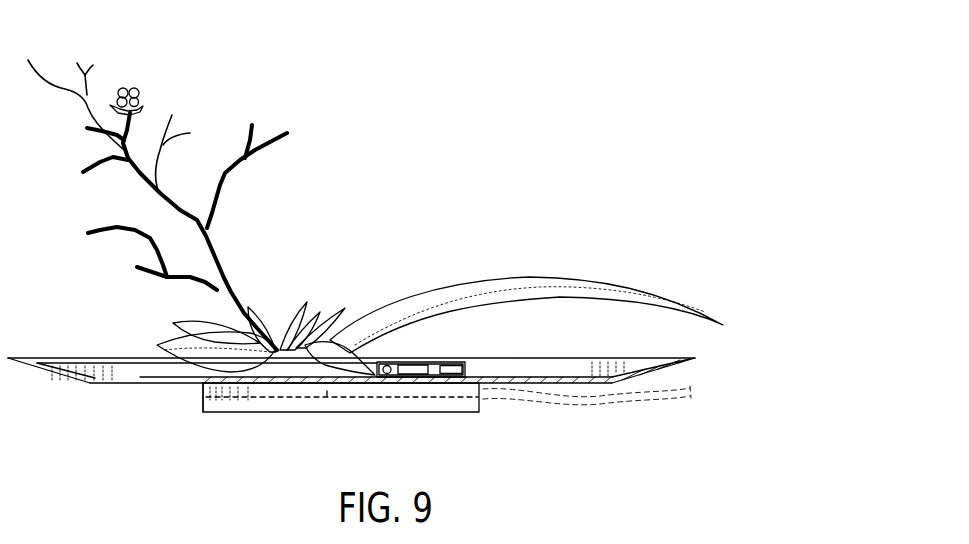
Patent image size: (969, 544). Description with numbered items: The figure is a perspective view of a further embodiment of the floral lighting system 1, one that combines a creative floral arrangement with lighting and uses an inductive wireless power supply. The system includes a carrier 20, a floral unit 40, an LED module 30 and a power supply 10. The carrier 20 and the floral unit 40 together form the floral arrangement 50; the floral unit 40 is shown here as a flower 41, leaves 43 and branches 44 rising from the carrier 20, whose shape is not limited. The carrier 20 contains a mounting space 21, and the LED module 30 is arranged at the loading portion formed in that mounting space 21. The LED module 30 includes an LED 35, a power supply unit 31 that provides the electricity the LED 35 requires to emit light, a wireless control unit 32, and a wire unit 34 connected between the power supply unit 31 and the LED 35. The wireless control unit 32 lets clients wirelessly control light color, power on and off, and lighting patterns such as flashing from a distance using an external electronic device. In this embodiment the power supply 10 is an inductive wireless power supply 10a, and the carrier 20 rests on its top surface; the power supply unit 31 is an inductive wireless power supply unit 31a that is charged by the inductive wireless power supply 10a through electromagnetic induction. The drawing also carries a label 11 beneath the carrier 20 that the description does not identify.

The floral lighting system 1 is at (563, 112).
The power supply 10 is at (386, 432).
The inductive wireless power supply 10a is at (200, 402).
The water reservoir 11 is at (343, 393).
The carrier 20 is at (117, 354).
The mounting space 21 is at (547, 366).
The LED module 30 is at (460, 356).
The power supply unit 31 is at (481, 412).
The inductive wireless power supply unit 31a is at (452, 370).
The wireless control unit 32 is at (423, 368).
The wire unit 34 is at (368, 390).
The LED 35 is at (257, 317).
The floral unit 40 is at (375, 217).
The flower 41 is at (141, 93).
The leaf 43 is at (203, 337).
The branch 44 is at (127, 223).
The floral arrangement 50 is at (43, 187).